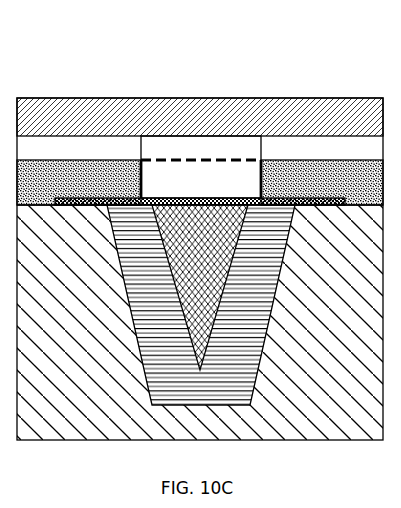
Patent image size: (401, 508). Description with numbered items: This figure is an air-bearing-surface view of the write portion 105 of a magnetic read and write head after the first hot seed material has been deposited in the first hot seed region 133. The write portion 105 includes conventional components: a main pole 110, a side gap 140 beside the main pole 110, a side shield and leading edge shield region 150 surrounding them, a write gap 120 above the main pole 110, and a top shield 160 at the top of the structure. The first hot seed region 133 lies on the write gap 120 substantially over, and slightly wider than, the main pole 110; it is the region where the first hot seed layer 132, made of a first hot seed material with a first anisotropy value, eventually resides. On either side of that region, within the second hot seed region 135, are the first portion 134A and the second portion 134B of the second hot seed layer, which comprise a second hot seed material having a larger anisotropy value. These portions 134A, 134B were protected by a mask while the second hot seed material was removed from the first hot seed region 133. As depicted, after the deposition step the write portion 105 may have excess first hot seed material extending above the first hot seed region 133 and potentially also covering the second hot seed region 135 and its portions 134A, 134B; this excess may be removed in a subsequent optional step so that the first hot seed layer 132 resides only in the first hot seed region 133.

The write portion 105 is at (146, 58).
The main pole 110 is at (188, 250).
The write gap 120 is at (96, 207).
The first hot seed layer 132 is at (188, 184).
The first hot seed region 133 is at (238, 160).
The first portion of the second hot seed layer 134A is at (68, 184).
The second portion of the second hot seed layer 134B is at (301, 184).
The second hot seed region 135 is at (82, 160).
The side gap 140 is at (188, 394).
The side shield and leading edge shield region 150 is at (191, 432).
The top shield 160 is at (185, 127).